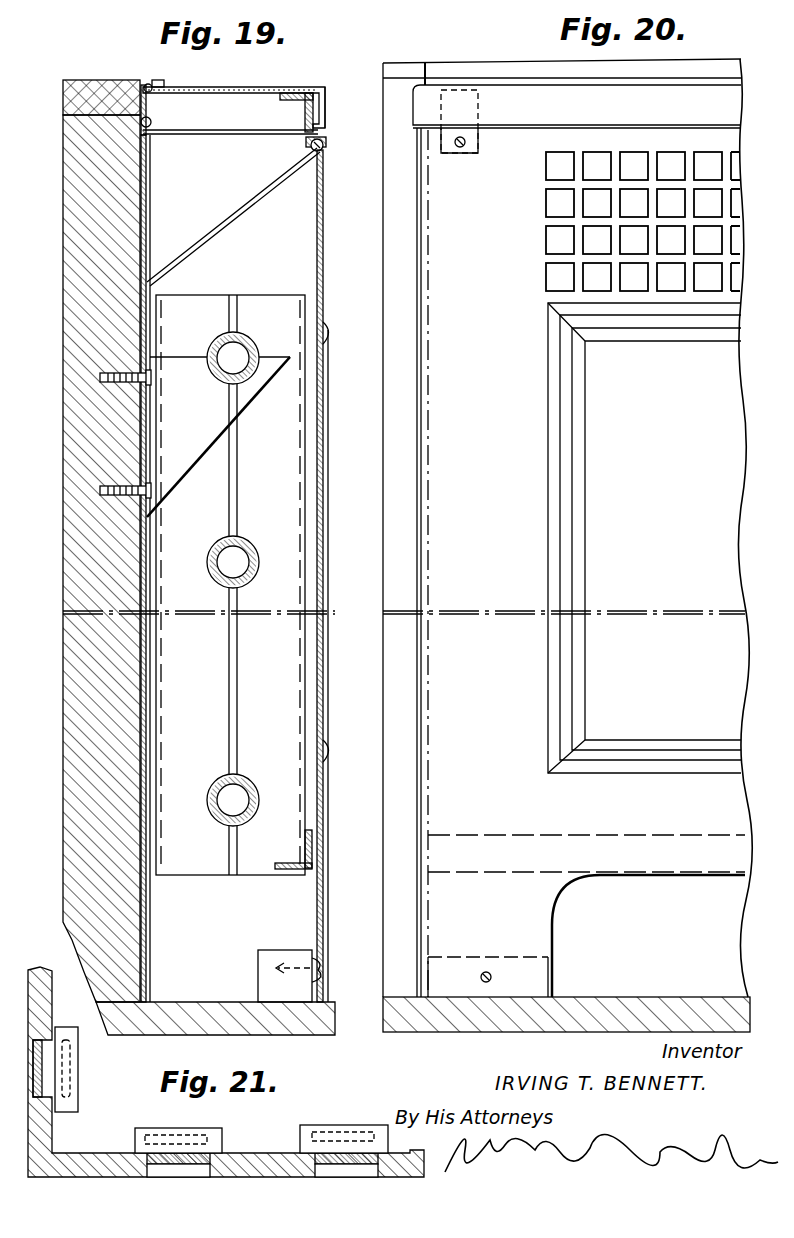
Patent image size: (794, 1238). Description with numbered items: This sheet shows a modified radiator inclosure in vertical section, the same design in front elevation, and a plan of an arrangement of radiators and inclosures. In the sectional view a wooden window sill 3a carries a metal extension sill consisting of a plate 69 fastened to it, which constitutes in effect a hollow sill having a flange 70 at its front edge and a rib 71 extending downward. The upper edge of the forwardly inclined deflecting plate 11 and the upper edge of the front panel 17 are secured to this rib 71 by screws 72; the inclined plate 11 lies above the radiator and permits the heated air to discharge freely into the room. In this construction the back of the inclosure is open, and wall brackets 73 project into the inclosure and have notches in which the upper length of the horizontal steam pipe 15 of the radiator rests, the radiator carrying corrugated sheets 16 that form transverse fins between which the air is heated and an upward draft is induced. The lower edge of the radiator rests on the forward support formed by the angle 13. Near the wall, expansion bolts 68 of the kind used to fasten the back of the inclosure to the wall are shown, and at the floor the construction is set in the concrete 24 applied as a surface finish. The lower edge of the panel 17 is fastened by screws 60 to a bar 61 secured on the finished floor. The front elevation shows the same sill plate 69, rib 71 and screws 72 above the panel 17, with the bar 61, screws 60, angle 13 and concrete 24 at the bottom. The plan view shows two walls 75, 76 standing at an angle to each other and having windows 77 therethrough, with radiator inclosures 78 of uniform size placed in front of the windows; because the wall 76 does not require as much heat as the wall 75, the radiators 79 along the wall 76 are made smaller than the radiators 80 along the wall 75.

In FIG. 19, the wooden window sill 3a is at (120, 82).
In FIG. 20, the wooden window sill 3a is at (462, 82).
In FIG. 19, the plate 69 is at (250, 87).
In FIG. 20, the plate 69 is at (523, 88).
In FIG. 19, the flange 70 is at (326, 116).
In FIG. 19, the rib 71 is at (308, 118).
In FIG. 20, the rib 71 is at (480, 108).
In FIG. 19, the screws 72 is at (326, 147).
In FIG. 20, the screws 72 is at (462, 150).
In FIG. 19, the forwardly inclined plate 11 is at (218, 238).
In FIG. 19, the horizontal steam pipe 15 is at (244, 336).
In FIG. 19, the wall brackets 73 is at (218, 437).
In FIG. 19, the panel 17 is at (323, 379).
In FIG. 20, the panel 17 is at (644, 538).
In FIG. 19, the expansion bolts 68 is at (152, 496).
In FIG. 19, the corrugated sheets 16 is at (230, 585).
In FIG. 19, the angle 13 is at (280, 876).
In FIG. 20, the angle 13 is at (510, 876).
In FIG. 19, the concrete 24 is at (190, 1003).
In FIG. 20, the concrete 24 is at (606, 998).
In FIG. 19, the bar 61 is at (258, 968).
In FIG. 20, the bar 61 is at (482, 957).
In FIG. 19, the screws 60 is at (320, 976).
In FIG. 20, the screws 60 is at (492, 977).
In FIG. 21, the wall 76 is at (42, 968).
In FIG. 21, the windows 77 is at (78, 1090).
In FIG. 21, the radiator inclosures 78 is at (78, 1070).
In FIG. 21, the radiators 79 is at (70, 1052).
In FIG. 21, the radiators 80 is at (200, 1132).
In FIG. 21, the wall 75 is at (424, 1162).